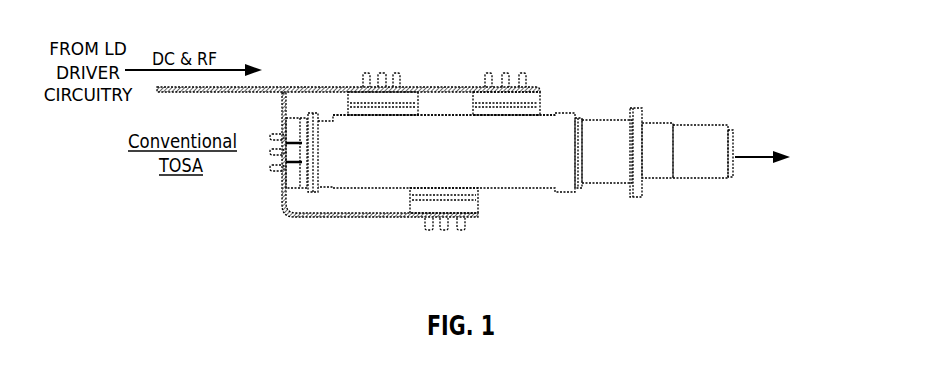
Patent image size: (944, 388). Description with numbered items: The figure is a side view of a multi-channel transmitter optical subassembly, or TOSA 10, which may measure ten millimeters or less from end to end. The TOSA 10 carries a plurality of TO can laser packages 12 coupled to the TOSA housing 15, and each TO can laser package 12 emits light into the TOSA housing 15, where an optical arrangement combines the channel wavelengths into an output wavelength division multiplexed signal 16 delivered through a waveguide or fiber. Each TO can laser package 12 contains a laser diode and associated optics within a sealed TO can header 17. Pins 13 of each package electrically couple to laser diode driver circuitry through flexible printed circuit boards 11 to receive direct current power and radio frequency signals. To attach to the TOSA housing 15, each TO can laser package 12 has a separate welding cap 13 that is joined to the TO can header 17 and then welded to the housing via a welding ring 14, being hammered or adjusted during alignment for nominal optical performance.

The TOSA 10 is at (289, 56).
The flexible printed circuit board 11 is at (326, 88).
The TO can laser package 12 is at (423, 80).
The welding cap 13 is at (382, 67).
The welding ring 14 is at (406, 118).
The TOSA housing 15 is at (513, 171).
The output wavelength division multiplexed signal 16 is at (752, 157).
The TO can header 17 is at (410, 99).